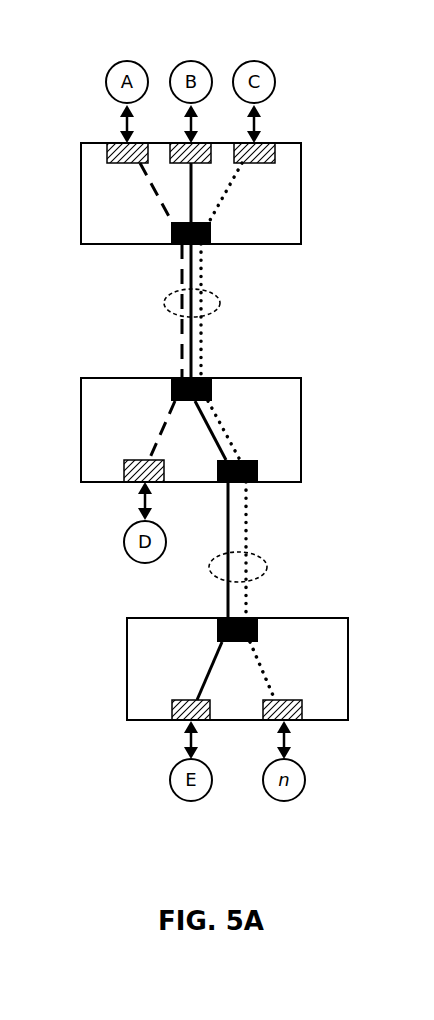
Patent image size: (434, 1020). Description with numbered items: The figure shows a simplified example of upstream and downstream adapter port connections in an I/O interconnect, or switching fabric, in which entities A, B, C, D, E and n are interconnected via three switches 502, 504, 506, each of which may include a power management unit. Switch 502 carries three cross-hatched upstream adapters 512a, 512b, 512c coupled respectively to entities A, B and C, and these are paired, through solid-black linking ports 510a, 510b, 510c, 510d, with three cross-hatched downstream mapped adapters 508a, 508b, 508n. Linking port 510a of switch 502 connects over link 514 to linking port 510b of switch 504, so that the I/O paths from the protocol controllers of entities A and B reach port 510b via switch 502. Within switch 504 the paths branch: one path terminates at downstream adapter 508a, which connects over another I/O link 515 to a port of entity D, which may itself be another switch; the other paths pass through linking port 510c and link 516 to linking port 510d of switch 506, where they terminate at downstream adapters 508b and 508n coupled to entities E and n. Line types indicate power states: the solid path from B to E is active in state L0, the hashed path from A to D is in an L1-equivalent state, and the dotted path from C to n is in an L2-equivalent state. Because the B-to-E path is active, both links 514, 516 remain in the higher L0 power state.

The switch 502 is at (290, 200).
The switch 504 is at (288, 430).
The switch 506 is at (332, 670).
The upstream adapter 512a is at (122, 152).
The upstream adapter 512b is at (197, 152).
The upstream adapter 512c is at (263, 152).
The linking port 510a is at (174, 246).
The linking port 510b is at (172, 378).
The linking port 510c is at (255, 482).
The linking port 510d is at (223, 618).
The link 514 is at (220, 303).
The link 516 is at (267, 567).
The downstream mapped adapter 508a is at (128, 476).
The downstream mapped adapter 508b is at (177, 720).
The downstream mapped adapter 508n is at (298, 713).
The I/O link 515 is at (139, 502).